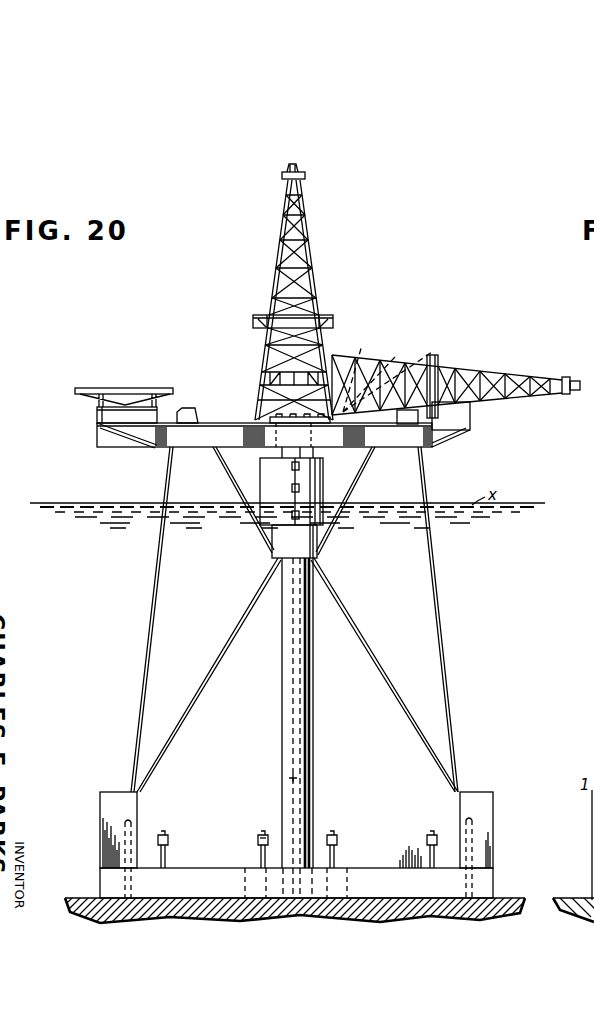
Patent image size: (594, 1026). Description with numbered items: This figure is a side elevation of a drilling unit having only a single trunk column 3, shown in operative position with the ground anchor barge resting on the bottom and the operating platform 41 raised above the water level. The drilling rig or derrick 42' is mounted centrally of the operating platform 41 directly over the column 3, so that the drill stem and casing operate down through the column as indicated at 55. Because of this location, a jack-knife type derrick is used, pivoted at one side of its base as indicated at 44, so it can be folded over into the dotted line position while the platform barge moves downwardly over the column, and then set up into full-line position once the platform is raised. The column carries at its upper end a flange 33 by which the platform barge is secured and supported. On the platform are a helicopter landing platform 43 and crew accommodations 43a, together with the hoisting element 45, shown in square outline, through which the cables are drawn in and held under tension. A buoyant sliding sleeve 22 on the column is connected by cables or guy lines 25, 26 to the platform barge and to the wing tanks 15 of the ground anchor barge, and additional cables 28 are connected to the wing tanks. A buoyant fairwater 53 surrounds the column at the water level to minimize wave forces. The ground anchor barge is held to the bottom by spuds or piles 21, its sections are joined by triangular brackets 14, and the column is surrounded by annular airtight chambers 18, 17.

The drilling rig or derrick 42' is at (416, 294).
The helicopter landing platform 43 is at (130, 390).
The crew accommodations 43a is at (98, 416).
The cable hoisting element 45 is at (190, 409).
The deck 41 is at (227, 433).
The flange 33 is at (291, 415).
The derrick pivot 44 is at (346, 408).
The cables or guy lines 25 is at (238, 486).
The fairwater 53 is at (288, 489).
The buoyant sliding sleeve 22 is at (283, 555).
The additional cables 28 is at (148, 609).
The cables or guy lines 26 is at (225, 648).
The trunk column 3 is at (314, 676).
The drill stem and casing path 55 is at (292, 781).
The wing tanks 15 is at (122, 810).
The annular airtight chamber 17 is at (262, 838).
The triangular brackets 14 is at (170, 859).
The spuds or piles 21 is at (462, 822).
The annular airtight chamber 18 is at (325, 880).